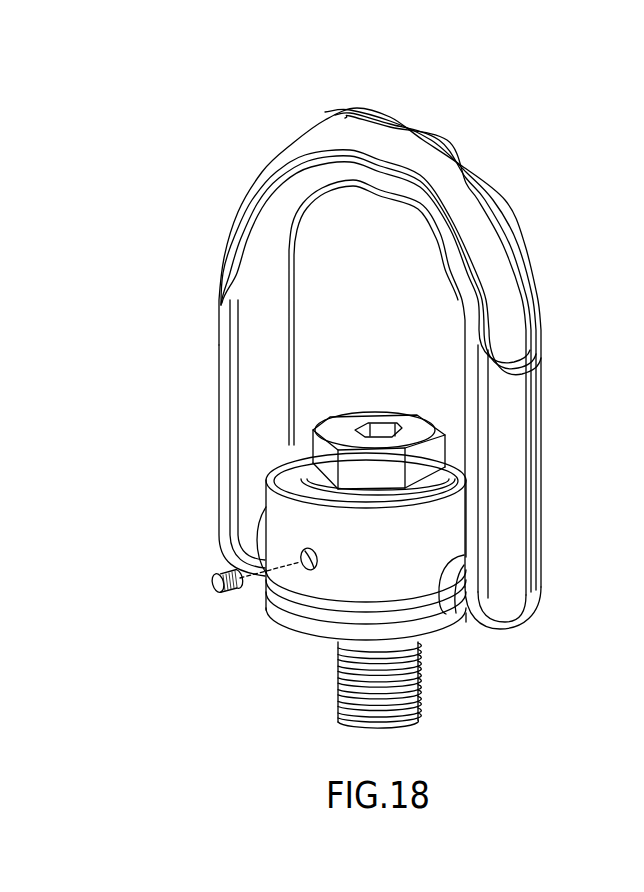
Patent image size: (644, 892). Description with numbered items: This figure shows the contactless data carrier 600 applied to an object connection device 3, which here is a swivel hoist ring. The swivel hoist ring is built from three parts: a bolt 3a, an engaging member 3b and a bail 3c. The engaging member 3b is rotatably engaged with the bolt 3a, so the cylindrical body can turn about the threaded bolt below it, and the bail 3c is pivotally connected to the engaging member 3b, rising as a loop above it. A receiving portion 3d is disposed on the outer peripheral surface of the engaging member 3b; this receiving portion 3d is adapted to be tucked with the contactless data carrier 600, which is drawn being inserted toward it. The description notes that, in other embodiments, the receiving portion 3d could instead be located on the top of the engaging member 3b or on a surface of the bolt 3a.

The object connection device 3 is at (351, 420).
The bolt 3a is at (411, 428).
The engaging member 3b is at (340, 603).
The bail 3c is at (518, 224).
The receiving portion 3d is at (300, 552).
The contactless data carrier 600 is at (207, 593).